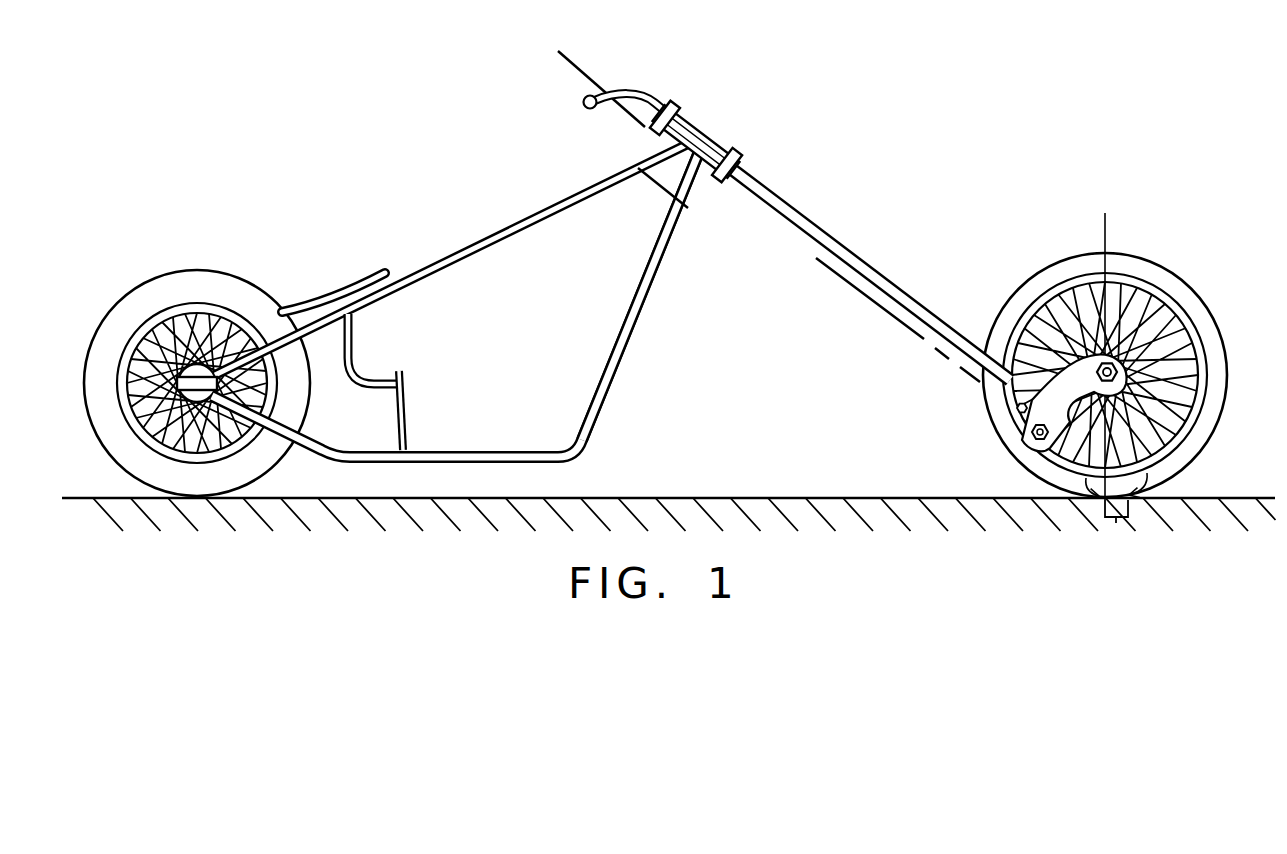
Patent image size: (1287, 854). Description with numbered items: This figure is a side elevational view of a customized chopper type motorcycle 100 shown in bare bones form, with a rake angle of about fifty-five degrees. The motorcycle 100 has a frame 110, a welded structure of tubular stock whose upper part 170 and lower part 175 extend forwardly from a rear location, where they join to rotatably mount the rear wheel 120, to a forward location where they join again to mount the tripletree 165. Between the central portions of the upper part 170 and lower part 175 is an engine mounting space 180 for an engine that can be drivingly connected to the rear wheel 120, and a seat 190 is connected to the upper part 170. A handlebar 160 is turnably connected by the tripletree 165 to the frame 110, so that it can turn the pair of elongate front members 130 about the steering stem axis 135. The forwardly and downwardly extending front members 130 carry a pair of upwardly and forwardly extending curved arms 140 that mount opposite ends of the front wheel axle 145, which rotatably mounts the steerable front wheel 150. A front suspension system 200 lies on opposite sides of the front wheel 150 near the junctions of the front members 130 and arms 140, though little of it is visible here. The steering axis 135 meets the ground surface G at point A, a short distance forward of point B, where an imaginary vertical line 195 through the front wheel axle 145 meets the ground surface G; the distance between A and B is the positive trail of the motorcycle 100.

The customized motorcycle 100 is at (682, 256).
The frame 110 is at (455, 300).
The rear wheel 120 is at (207, 266).
The elongate front members 130 is at (851, 252).
The steering stem axis 135 is at (576, 77).
The elongate arms 140 is at (1013, 402).
The front wheel axle 145 is at (1130, 356).
The front wheel 150 is at (1165, 267).
The handlebar 160 is at (607, 107).
The tripletree 165 is at (681, 171).
The upper part of the frame 170 is at (473, 236).
The lower part of the frame 175 is at (638, 338).
The engine mounting space 180 is at (547, 377).
The seat 190 is at (348, 288).
The imaginary vertical line 195 is at (1110, 225).
The front suspension system 200 is at (1016, 433).
The ground surface G is at (668, 496).
The point A is at (1146, 500).
The point B is at (1088, 499).